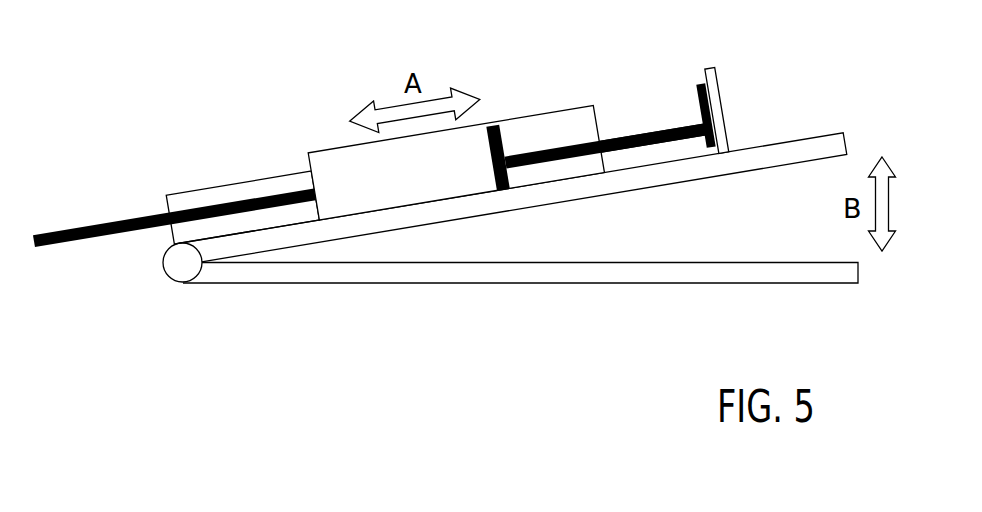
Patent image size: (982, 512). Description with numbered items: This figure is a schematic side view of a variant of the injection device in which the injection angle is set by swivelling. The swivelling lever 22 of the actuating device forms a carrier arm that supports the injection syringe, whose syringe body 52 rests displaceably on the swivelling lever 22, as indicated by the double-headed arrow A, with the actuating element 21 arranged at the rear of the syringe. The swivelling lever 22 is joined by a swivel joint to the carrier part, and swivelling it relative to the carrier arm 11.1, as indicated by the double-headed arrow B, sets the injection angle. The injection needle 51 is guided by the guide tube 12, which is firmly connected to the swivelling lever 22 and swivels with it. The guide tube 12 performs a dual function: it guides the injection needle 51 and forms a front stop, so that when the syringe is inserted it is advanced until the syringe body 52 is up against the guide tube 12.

The carrier arm 11.1 is at (498, 270).
The swivelling lever 22 is at (815, 152).
The guide tube 12 is at (252, 192).
The injection needle 51 is at (118, 219).
The syringe body 52 is at (547, 117).
The actuating element 21 is at (710, 77).